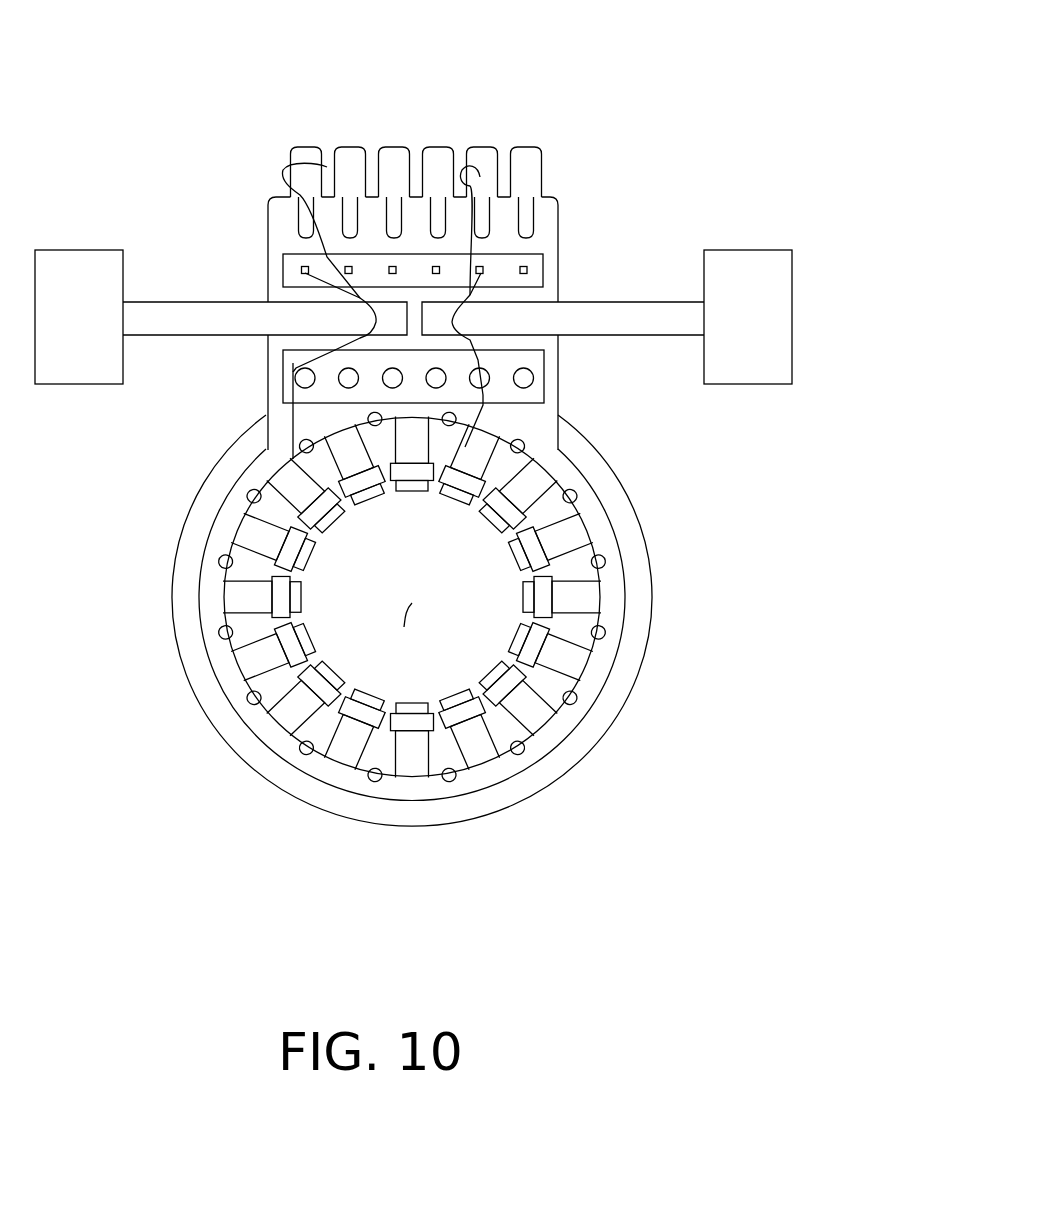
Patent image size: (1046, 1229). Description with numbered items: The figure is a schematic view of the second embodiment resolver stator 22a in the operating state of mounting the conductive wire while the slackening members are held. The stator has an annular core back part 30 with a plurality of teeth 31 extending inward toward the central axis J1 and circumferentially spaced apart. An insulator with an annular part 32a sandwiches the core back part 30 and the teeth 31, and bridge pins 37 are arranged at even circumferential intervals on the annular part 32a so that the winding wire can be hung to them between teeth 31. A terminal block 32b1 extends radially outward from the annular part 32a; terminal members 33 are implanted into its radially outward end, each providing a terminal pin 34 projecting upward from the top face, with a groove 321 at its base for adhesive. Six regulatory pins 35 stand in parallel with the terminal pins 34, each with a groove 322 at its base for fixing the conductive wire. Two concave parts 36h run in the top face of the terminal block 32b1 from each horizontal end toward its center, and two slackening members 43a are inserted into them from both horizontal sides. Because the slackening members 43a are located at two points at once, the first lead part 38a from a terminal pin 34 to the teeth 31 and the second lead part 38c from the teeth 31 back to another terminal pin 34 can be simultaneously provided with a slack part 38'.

The core back part 30 is at (637, 680).
The teeth 31 is at (523, 597).
The annular part 32a is at (627, 568).
The terminal block 32b1 is at (558, 205).
The terminal members 33 is at (525, 147).
The terminal pins 34 is at (543, 272).
The regulatory pins 35 is at (544, 378).
The concave parts 36h is at (407, 322).
The bridge pins 37 is at (585, 480).
The slack part 38' is at (373, 158).
The first lead part 38a is at (268, 406).
The second lead part 38c is at (483, 400).
The slackening members 43a is at (82, 250).
The groove 321 is at (283, 262).
The groove 322 is at (283, 354).
The resolver stator 22a is at (615, 808).
The central axis J1 is at (400, 626).